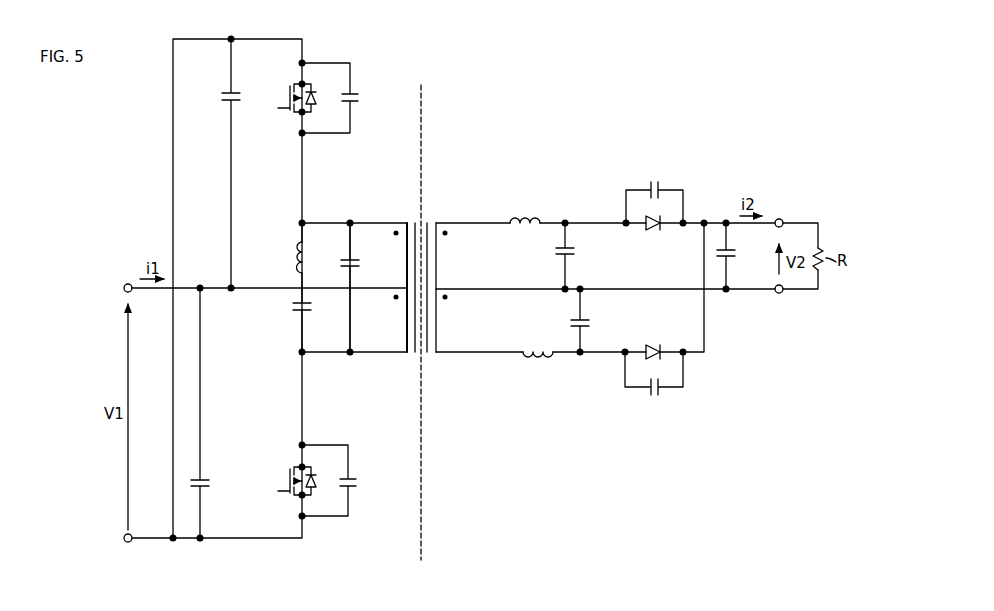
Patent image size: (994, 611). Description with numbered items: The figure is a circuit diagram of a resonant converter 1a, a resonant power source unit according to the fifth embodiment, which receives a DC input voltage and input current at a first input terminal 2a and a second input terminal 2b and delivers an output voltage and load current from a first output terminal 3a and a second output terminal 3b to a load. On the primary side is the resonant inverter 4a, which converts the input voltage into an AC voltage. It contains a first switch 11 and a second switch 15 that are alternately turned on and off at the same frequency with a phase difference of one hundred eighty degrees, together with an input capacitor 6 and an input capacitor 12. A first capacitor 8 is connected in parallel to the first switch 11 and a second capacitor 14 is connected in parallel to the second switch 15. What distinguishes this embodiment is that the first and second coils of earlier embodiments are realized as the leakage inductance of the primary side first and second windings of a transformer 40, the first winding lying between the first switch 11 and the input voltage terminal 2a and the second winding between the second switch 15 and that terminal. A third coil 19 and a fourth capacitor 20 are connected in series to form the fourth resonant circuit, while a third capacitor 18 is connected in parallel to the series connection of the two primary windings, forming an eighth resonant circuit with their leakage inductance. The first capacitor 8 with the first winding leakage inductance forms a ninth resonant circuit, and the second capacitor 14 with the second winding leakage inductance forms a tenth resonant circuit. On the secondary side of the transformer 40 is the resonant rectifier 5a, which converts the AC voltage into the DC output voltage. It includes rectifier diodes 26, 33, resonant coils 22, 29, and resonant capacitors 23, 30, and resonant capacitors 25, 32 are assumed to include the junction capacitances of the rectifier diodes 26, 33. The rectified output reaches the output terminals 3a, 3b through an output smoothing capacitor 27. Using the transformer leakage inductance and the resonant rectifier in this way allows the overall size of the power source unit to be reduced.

The resonant converter 1a is at (108, 100).
The first input terminal 2a is at (124, 283).
The second input terminal 2b is at (124, 545).
The first output terminal 3a is at (782, 219).
The second output terminal 3b is at (781, 294).
The resonant inverter 4a is at (312, 556).
The resonant rectifier 5a is at (571, 493).
The input capacitor 6 is at (209, 483).
The first capacitor 8 is at (343, 482).
The first switch 11 is at (286, 469).
The input capacitor 12 is at (221, 98).
The second capacitor 14 is at (343, 97).
The second switch 15 is at (285, 90).
The third capacitor 18 is at (358, 262).
The third coil 19 is at (308, 258).
The fourth capacitor 20 is at (308, 307).
The resonant coil 22 is at (527, 215).
The resonant capacitor 23 is at (574, 252).
The resonant capacitor 25 is at (655, 181).
The rectifier diode 26 is at (655, 232).
The output smoothing capacitor 27 is at (736, 254).
The resonant coil 29 is at (537, 360).
The resonant capacitor 30 is at (589, 322).
The resonant capacitor 32 is at (655, 396).
The rectifier diode 33 is at (653, 345).
The transformer 40 is at (423, 220).